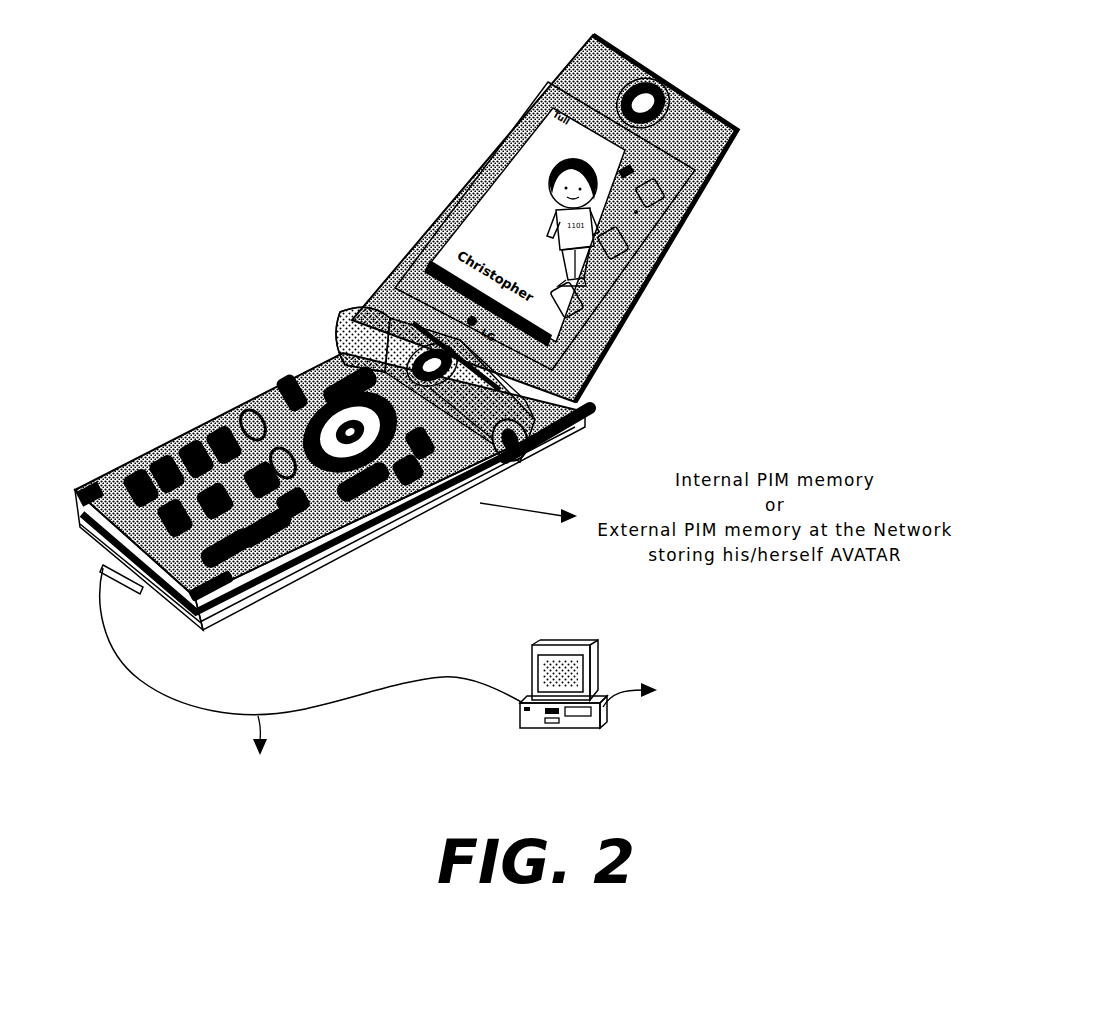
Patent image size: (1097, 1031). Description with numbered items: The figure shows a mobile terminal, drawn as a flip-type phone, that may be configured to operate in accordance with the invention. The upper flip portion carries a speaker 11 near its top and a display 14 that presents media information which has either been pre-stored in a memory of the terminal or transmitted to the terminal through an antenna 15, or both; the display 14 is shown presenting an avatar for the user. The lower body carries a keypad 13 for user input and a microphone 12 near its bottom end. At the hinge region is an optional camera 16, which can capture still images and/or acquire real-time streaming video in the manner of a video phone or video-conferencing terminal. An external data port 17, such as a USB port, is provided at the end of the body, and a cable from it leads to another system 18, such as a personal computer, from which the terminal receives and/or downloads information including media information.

The speaker 11 is at (653, 83).
The microphone 12 is at (208, 624).
The keypad 13 is at (347, 506).
The display 14 is at (526, 170).
The antenna 15 is at (580, 408).
The camera 16 is at (426, 350).
The external data port 17 is at (297, 673).
The another system 18 is at (642, 707).